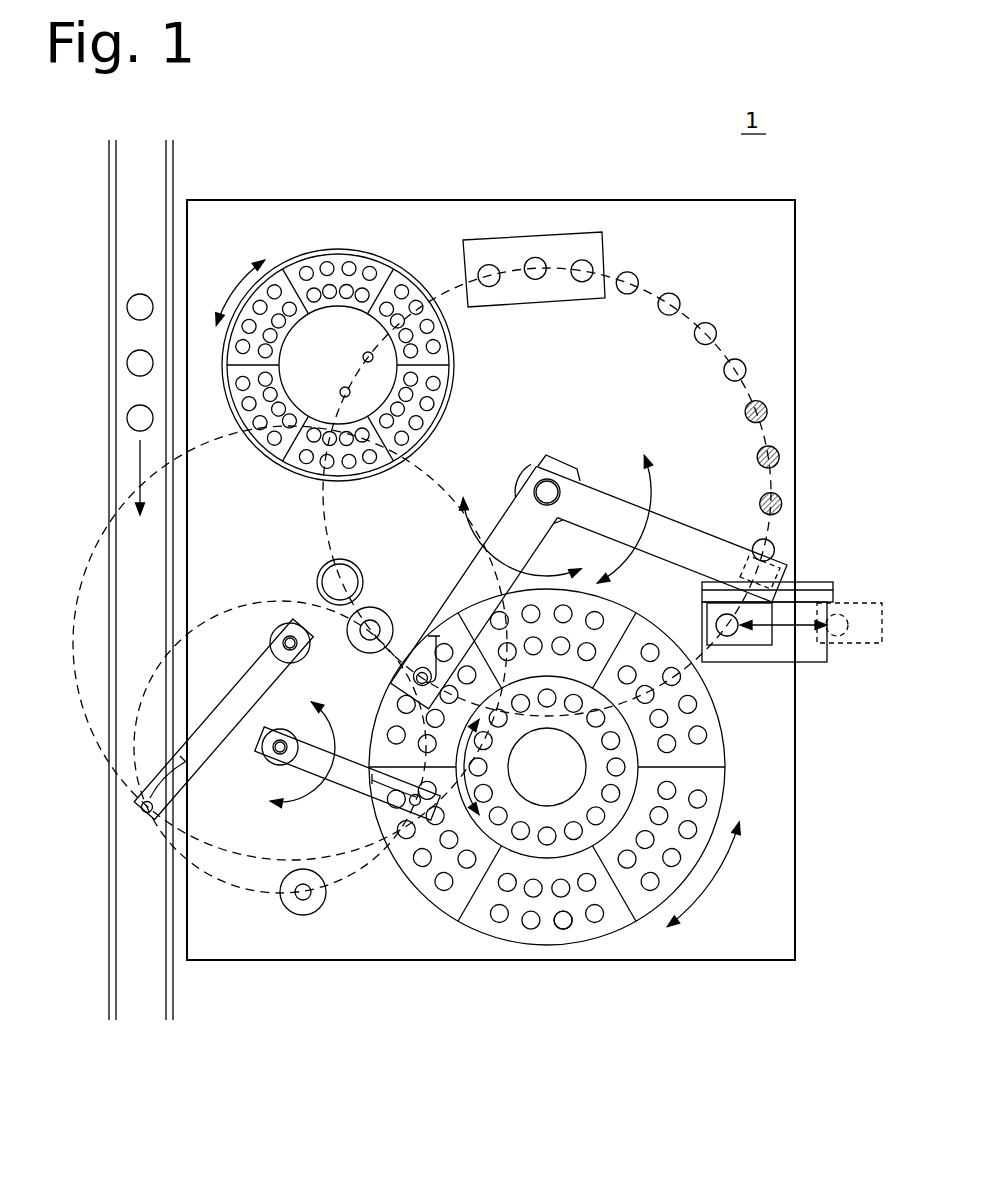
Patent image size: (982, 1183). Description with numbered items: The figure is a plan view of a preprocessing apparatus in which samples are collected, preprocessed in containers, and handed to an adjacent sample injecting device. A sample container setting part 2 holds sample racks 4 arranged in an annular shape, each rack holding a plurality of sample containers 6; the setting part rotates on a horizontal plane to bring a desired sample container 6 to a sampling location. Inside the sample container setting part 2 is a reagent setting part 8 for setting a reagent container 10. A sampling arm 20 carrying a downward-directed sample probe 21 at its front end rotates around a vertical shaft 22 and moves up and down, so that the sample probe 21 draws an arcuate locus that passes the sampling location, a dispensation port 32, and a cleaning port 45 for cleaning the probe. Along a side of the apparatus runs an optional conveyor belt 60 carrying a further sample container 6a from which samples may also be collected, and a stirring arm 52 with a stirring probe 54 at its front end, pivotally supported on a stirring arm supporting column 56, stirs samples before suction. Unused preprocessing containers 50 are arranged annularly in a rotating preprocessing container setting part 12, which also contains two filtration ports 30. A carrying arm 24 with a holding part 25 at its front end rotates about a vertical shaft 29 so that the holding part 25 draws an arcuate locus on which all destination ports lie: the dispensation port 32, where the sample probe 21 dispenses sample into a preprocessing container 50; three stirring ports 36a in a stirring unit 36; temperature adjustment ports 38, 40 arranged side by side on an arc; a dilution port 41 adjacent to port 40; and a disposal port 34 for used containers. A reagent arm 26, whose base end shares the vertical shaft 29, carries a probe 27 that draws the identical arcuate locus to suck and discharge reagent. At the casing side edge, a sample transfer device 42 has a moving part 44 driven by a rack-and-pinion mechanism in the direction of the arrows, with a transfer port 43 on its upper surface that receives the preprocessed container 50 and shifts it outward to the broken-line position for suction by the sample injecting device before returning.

The sample container setting part 2 is at (607, 936).
The sample rack 4 is at (455, 900).
The sample container 6 is at (564, 930).
The sample container 6a is at (128, 415).
The reagent setting part 8 is at (632, 763).
The reagent container 10 is at (622, 772).
The preprocessing container setting part 12 is at (292, 258).
The sampling arm 20 is at (330, 797).
The sample probe 21 is at (405, 806).
The vertical shaft 22 is at (270, 757).
The carrying arm 24 is at (607, 522).
The holding part 25 is at (785, 565).
The reagent arm 26 is at (507, 545).
The probe 27 is at (416, 677).
The vertical shaft 29 is at (545, 487).
The filtration port 30 is at (363, 357).
The dispensation port 32 is at (374, 616).
The disposal port 34 is at (325, 568).
The stirring unit 36 is at (489, 233).
The stirring port 36a is at (538, 258).
The temperature adjustment port 38 is at (630, 272).
The temperature adjustment port 40 is at (767, 405).
The dilution port 41 is at (772, 545).
The sample transfer device 42 is at (825, 587).
The transfer port 43 is at (733, 640).
The moving part 44 is at (775, 652).
The cleaning port 45 is at (298, 905).
The preprocessing container 50 is at (327, 262).
The stirring arm 52 is at (222, 720).
The stirring probe 54 is at (140, 810).
The stirring arm supporting column 56 is at (286, 636).
The conveyor belt 60 is at (135, 203).